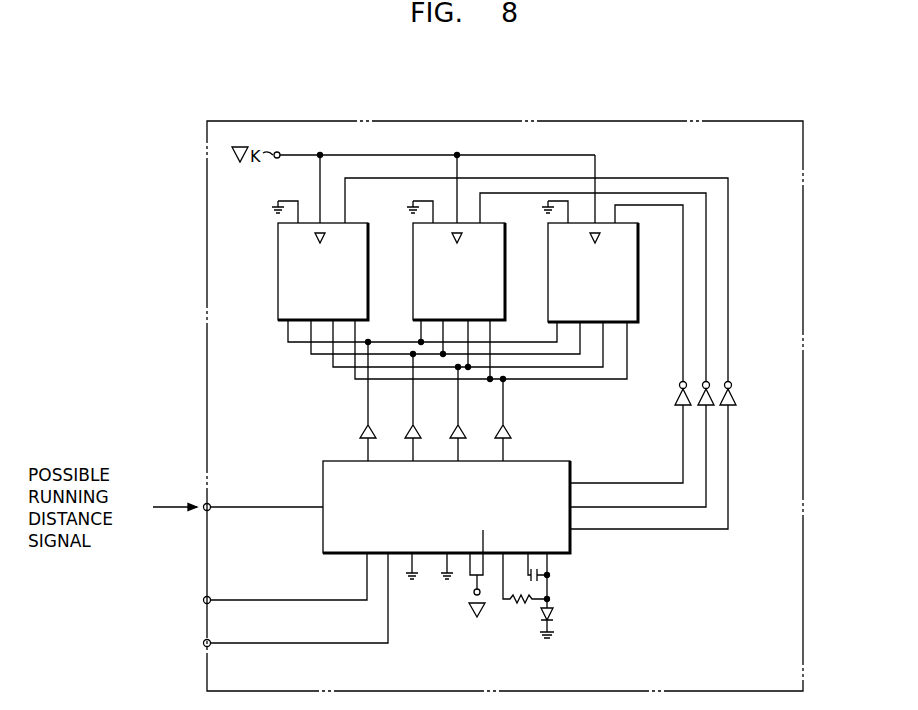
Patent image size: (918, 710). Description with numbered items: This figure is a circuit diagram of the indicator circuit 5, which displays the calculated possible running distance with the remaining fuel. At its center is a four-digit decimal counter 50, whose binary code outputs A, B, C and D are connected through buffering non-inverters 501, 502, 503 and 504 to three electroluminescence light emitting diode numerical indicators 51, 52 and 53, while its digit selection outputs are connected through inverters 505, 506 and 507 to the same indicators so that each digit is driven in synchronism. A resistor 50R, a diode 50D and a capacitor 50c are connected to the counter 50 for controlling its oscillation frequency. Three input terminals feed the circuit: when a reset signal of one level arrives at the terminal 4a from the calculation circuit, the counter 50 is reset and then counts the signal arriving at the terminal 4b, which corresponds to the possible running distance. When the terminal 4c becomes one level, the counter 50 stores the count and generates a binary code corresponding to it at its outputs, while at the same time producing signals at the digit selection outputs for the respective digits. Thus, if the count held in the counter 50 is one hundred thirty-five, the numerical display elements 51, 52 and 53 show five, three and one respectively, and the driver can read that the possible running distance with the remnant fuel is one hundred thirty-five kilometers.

The indicator circuit 5 is at (713, 122).
The electroluminescence diode numerical indicator 53 is at (277, 240).
The electroluminescence diode numerical indicator 52 is at (507, 260).
The electroluminescence diode numerical indicator 51 is at (641, 262).
The buffering non-inverter 501 is at (366, 424).
The buffering non-inverter 502 is at (411, 424).
The buffering non-inverter 503 is at (452, 432).
The buffering non-inverter 504 is at (505, 431).
The inverter 505 is at (671, 400).
The inverter 506 is at (712, 405).
The inverter 507 is at (733, 392).
The 4-digit decimal counter 50 is at (571, 462).
The capacitor 50c is at (534, 570).
The resistor 50R is at (518, 605).
The diode 50D is at (556, 613).
The terminal 4a is at (203, 642).
The terminal 4b is at (203, 504).
The terminal 4c is at (203, 598).